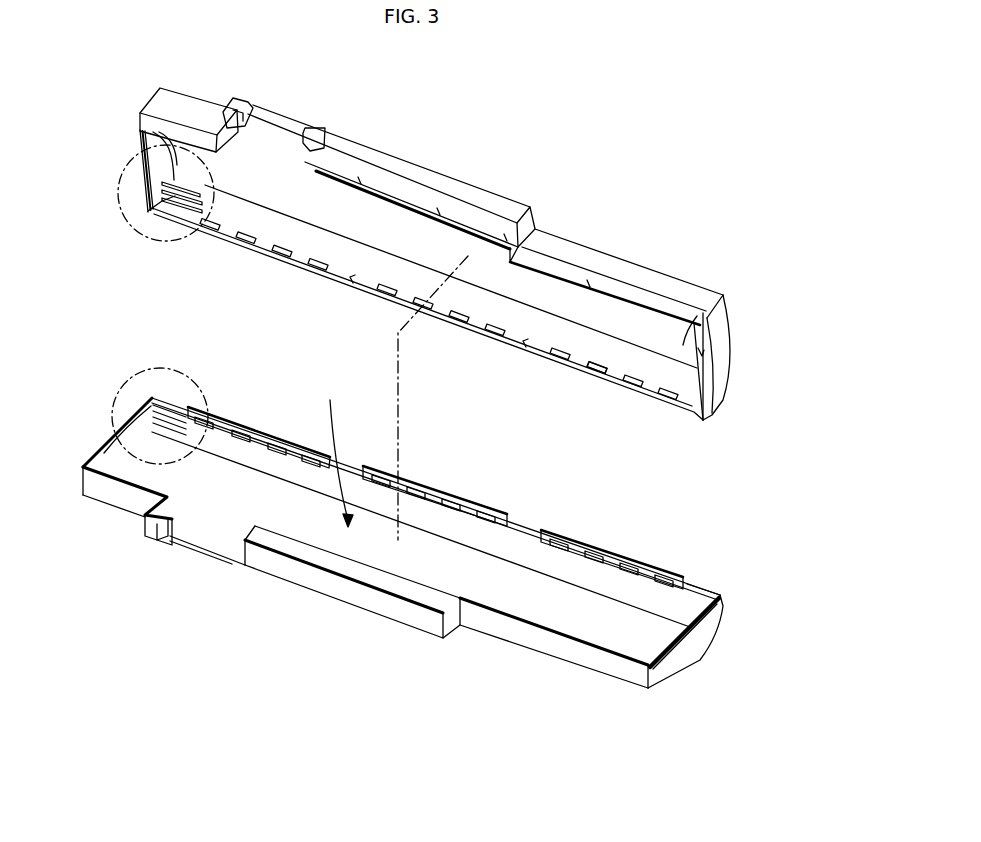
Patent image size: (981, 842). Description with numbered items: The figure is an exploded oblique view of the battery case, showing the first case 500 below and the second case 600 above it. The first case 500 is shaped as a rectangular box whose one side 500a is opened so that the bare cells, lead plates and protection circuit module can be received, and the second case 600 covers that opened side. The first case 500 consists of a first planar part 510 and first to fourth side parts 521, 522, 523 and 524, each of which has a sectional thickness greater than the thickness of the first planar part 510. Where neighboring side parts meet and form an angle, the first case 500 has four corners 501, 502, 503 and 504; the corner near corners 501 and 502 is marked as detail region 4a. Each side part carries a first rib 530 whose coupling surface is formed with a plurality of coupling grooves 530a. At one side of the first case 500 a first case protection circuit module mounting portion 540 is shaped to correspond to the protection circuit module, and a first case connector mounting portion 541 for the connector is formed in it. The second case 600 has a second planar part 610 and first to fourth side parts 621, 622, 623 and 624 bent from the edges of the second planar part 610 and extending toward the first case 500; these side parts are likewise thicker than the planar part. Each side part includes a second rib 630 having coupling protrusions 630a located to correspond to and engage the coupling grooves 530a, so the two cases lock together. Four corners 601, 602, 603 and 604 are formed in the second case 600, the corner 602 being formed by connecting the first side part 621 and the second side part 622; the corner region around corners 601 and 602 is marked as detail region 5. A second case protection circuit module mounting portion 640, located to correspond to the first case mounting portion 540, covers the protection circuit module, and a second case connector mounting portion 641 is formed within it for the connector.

The second case 600 is at (440, 274).
The first case 500 is at (402, 530).
The opened one side of the first case 500a is at (329, 453).
The detail region of cover corner 5 is at (118, 186).
The detail region of base corner 4a is at (120, 392).
The corner of the second case 601 is at (147, 137).
The corner of the second case 602 is at (170, 206).
The corner of the second case 603 is at (690, 392).
The corner of the second case 604 is at (680, 337).
The second planar part 610 is at (640, 259).
The first side part of the second case 621 is at (142, 112).
The second side part of the second case 622 is at (643, 394).
The third side part of the second case 623 is at (727, 370).
The fourth side part of the second case 624 is at (573, 246).
The second rib 630 is at (543, 344).
The coupling protrusions 630a is at (588, 371).
The second case protection circuit module mounting portion 640 is at (479, 198).
The second case connector mounting portion 641 is at (313, 130).
The corner of the first case 501 is at (105, 452).
The corner of the first case 502 is at (150, 397).
The corner of the first case 503 is at (697, 600).
The corner of the first case 504 is at (643, 648).
The first planar part 510 is at (580, 670).
The first side part of the first case 521 is at (80, 465).
The second side part of the first case 522 is at (690, 582).
The third side part of the first case 523 is at (695, 638).
The fourth side part of the first case 524 is at (545, 643).
The first rib 530 is at (578, 535).
The coupling grooves 530a is at (598, 550).
The first case protection circuit module mounting portion 540 is at (388, 613).
The first case connector mounting portion 541 is at (152, 538).